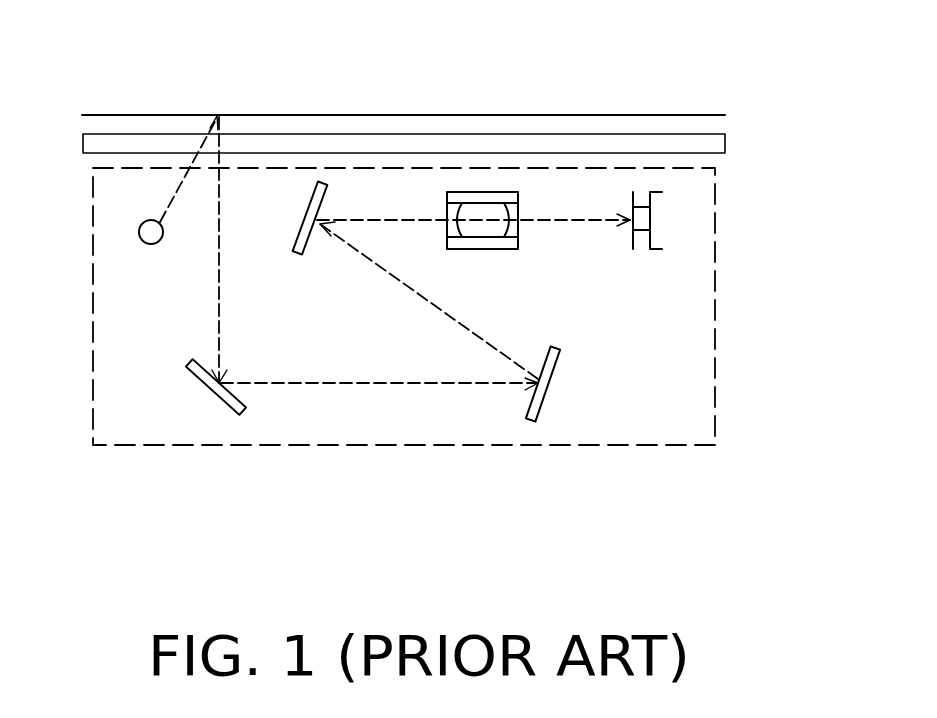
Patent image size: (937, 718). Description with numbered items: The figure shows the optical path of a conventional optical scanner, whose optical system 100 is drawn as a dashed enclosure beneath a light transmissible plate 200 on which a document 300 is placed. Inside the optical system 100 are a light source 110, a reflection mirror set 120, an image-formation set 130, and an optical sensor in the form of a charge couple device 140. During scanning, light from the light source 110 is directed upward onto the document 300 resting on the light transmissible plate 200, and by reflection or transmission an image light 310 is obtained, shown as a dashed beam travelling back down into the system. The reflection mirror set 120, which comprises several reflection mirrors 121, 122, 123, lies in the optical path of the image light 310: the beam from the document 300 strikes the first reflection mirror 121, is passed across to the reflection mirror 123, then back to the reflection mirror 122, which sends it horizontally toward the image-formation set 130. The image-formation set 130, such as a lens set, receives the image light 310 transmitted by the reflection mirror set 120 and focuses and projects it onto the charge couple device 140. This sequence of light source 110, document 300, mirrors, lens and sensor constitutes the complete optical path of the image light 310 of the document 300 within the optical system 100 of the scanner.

The optical system 100 is at (715, 325).
The light source 110 is at (138, 232).
The reflection mirror set 120 is at (373, 382).
The reflection mirror 121 is at (222, 398).
The reflection mirror 122 is at (295, 255).
The reflection mirror 123 is at (531, 410).
The image-formation set 130 is at (517, 198).
The charge couple device 140 is at (645, 220).
The light transmissible plate 200 is at (703, 142).
The document 300 is at (685, 115).
The image light 310 is at (222, 210).